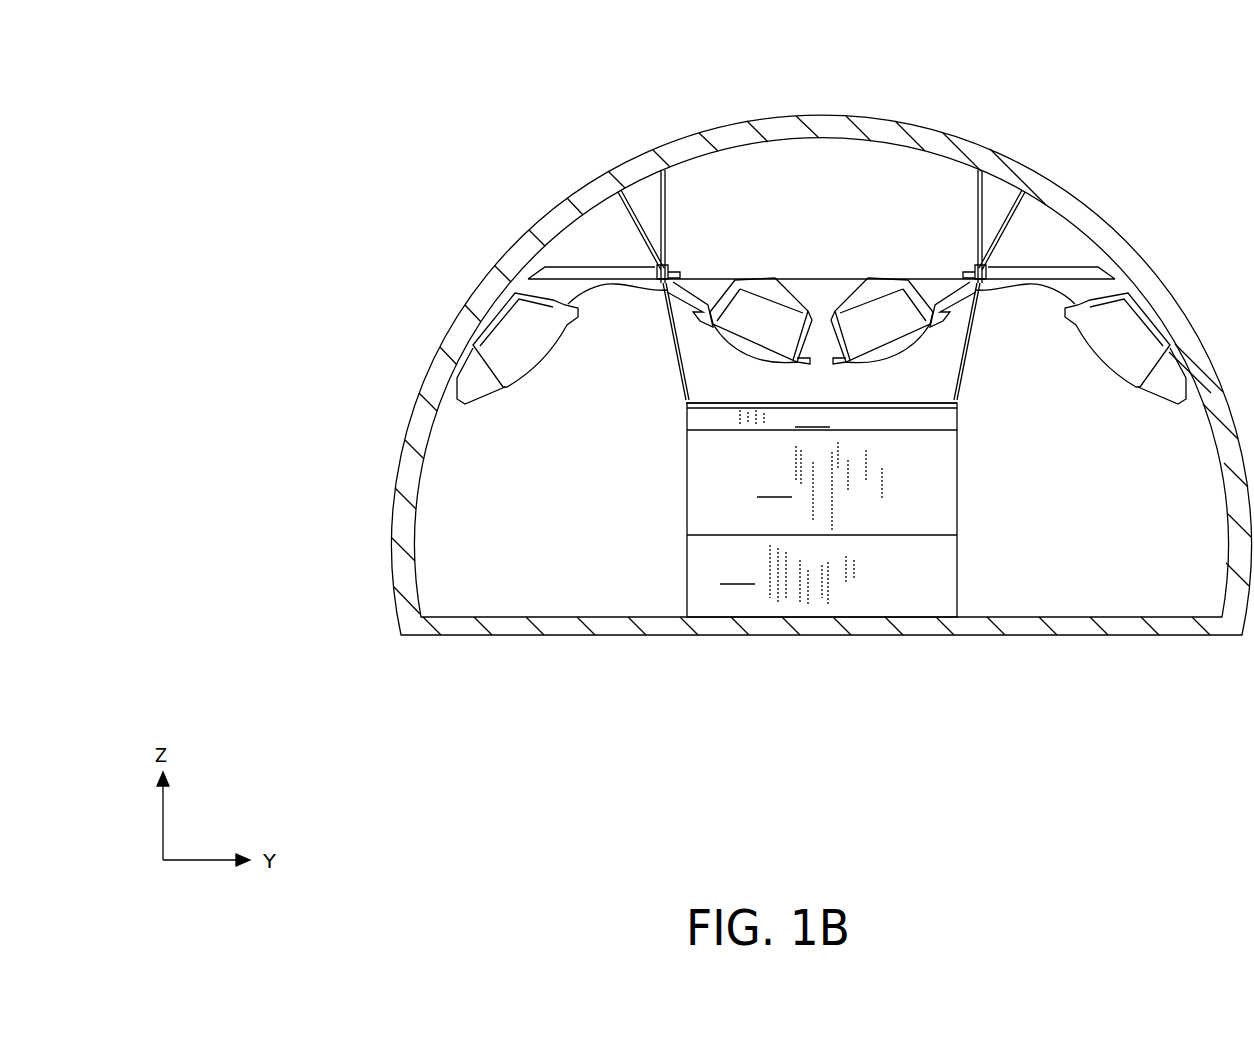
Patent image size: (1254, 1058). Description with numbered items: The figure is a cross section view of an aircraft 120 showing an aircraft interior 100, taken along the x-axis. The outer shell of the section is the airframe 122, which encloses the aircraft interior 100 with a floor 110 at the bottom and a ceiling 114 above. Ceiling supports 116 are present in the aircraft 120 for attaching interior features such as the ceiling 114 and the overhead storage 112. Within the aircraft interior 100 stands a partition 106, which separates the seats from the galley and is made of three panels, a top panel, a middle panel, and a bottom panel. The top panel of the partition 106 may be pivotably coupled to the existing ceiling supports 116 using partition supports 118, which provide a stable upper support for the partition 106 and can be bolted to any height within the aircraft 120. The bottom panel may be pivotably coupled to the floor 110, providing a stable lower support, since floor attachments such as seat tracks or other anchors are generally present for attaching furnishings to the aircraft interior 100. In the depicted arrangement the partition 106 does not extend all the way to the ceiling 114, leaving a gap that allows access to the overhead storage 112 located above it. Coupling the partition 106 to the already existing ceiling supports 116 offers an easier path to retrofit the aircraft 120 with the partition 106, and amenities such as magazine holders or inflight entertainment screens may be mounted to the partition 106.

The aircraft interior 100 is at (462, 500).
The partition 106 is at (957, 495).
The floor 110 is at (567, 626).
The overhead storage 112 is at (542, 357).
The ceiling 114 is at (606, 291).
The ceiling supports 116 is at (667, 237).
The partition supports 118 is at (690, 395).
The aircraft 120 is at (466, 122).
The airframe 122 is at (1052, 189).